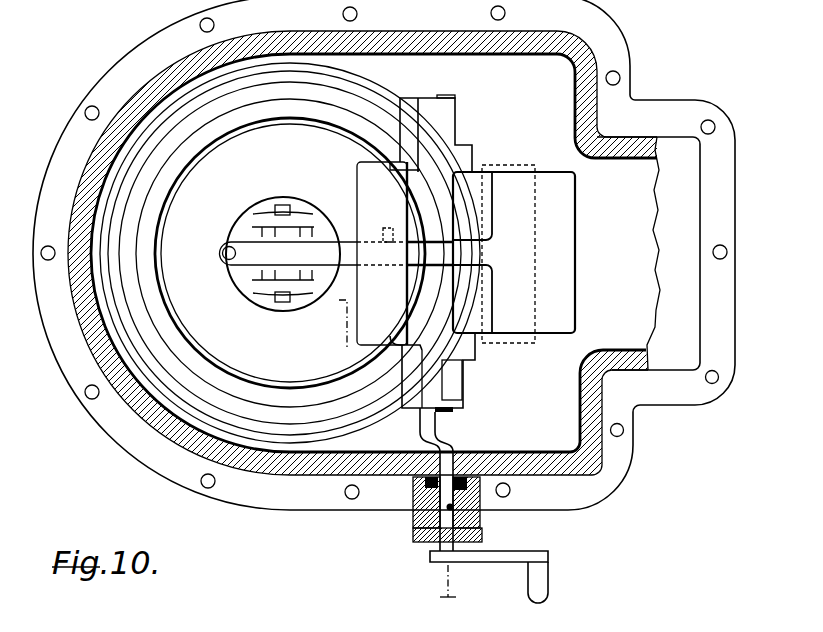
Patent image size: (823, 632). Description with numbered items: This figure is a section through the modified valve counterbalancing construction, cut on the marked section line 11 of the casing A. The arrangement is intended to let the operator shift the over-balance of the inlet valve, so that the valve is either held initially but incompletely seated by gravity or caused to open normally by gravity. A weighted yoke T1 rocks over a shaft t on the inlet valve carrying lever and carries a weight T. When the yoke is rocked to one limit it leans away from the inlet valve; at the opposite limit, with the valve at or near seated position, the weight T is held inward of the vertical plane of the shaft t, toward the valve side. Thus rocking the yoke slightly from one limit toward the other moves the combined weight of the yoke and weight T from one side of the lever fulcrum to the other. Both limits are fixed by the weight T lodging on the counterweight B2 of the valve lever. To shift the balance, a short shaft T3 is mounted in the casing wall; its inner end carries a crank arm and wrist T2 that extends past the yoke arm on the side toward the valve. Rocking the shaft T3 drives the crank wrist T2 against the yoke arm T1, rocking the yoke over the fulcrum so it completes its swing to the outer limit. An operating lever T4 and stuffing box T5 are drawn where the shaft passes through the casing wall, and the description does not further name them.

The casing A is at (520, 50).
The weight T is at (357, 190).
The weighted yoke T1 is at (393, 357).
The crank arm and wrist T2 is at (415, 416).
The short shaft T3 is at (418, 527).
The valve lever T4 is at (548, 563).
The stuffing box packing T5 is at (420, 485).
The shaft t is at (455, 413).
The counterweight B2 is at (577, 291).
The section line 11 is at (383, 458).